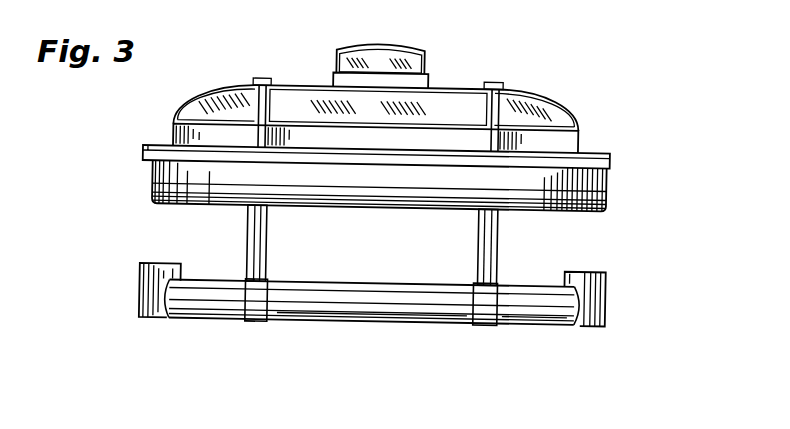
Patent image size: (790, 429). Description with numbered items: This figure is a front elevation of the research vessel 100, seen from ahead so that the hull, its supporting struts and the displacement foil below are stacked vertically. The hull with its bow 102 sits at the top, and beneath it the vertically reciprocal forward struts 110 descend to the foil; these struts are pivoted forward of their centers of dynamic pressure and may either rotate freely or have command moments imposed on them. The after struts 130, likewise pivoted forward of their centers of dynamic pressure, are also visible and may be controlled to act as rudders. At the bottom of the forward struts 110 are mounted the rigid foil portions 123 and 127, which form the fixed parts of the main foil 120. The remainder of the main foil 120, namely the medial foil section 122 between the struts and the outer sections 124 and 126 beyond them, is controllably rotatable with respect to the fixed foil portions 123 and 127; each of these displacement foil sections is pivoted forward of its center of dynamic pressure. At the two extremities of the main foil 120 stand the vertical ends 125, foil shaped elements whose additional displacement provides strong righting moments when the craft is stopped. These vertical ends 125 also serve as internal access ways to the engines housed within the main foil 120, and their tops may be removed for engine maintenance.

The research vessel 100 is at (443, 55).
The bow 102 is at (588, 194).
The forward struts 110 is at (494, 263).
The after struts 130 is at (503, 230).
The main foil 120 is at (395, 322).
The medial foil section 122 is at (325, 320).
The rigid foil portion 123 is at (485, 322).
The outer foil section 124 is at (538, 322).
The vertical ends 125 is at (608, 293).
The outer foil section 126 is at (180, 319).
The rigid foil portion 127 is at (257, 320).